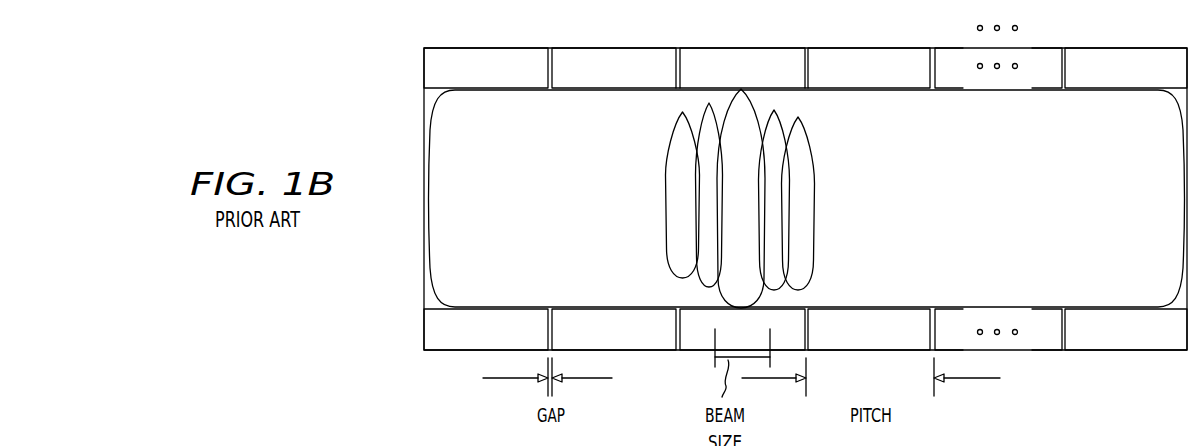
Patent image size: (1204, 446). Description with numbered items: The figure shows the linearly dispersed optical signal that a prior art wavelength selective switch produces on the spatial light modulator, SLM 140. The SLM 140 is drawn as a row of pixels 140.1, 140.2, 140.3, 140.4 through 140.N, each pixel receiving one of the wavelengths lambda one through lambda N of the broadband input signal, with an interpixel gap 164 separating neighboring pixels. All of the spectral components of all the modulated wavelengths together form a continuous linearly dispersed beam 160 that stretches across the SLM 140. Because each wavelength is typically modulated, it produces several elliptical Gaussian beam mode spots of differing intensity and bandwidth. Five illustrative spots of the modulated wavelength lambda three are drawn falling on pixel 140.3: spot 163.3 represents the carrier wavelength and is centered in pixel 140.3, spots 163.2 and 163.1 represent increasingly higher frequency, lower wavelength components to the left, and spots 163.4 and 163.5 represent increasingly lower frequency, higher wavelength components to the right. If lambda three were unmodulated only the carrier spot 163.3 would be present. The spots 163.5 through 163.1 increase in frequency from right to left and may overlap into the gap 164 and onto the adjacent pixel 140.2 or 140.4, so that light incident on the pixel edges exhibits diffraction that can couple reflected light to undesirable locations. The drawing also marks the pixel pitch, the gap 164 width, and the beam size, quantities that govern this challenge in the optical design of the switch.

The SLM 140 is at (390, 76).
The pixel 140.1 is at (486, 199).
The pixel 140.2 is at (614, 199).
The pixel 140.3 is at (742, 199).
The pixel 140.4 is at (869, 199).
The pixel 140.N is at (1126, 199).
The linearly dispersed continuous beam 160 is at (530, 152).
The beam mode spot 163.1 is at (669, 155).
The beam mode spot 163.2 is at (706, 107).
The beam mode spot 163.3 is at (760, 103).
The beam mode spot 163.4 is at (783, 113).
The beam mode spot 163.5 is at (802, 210).
The gap 164 is at (680, 352).